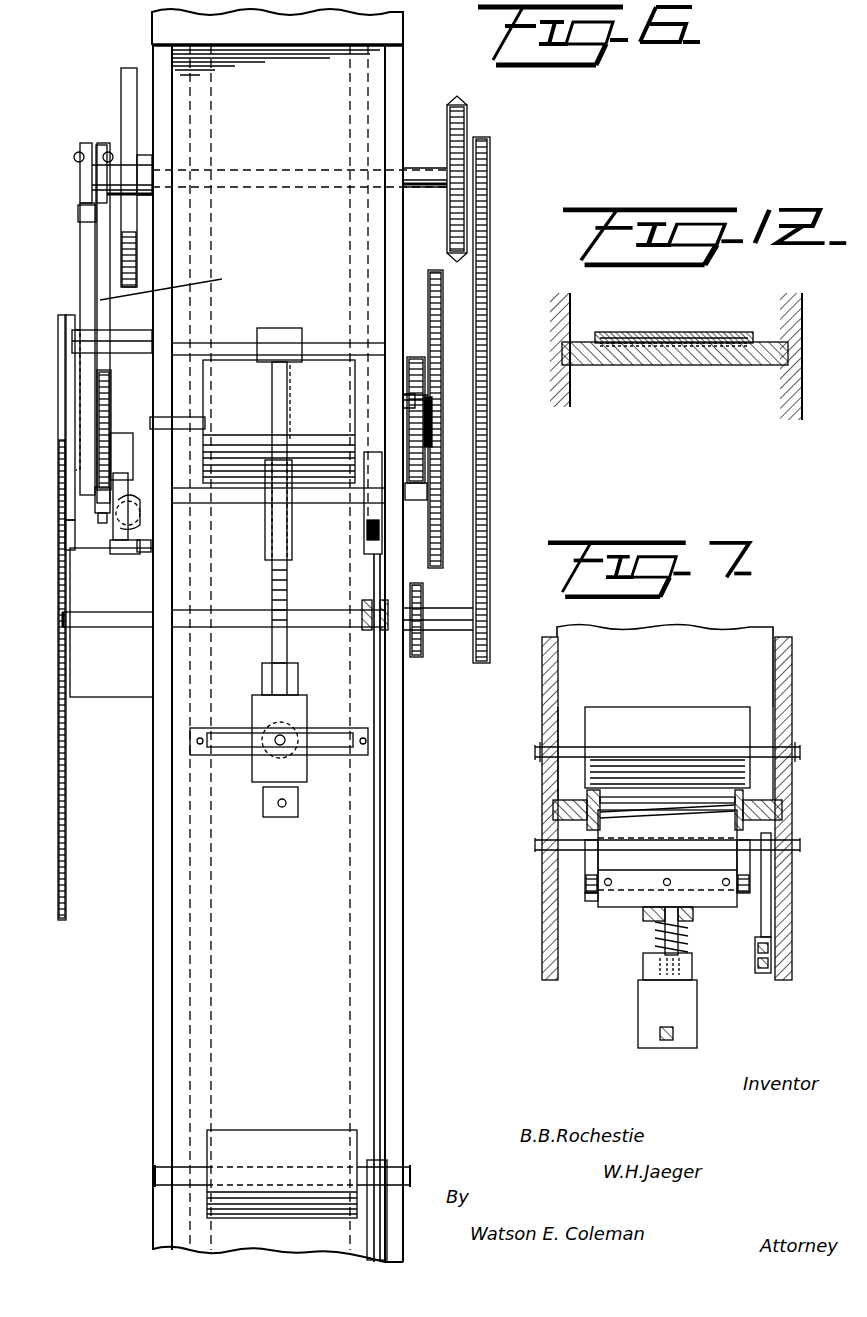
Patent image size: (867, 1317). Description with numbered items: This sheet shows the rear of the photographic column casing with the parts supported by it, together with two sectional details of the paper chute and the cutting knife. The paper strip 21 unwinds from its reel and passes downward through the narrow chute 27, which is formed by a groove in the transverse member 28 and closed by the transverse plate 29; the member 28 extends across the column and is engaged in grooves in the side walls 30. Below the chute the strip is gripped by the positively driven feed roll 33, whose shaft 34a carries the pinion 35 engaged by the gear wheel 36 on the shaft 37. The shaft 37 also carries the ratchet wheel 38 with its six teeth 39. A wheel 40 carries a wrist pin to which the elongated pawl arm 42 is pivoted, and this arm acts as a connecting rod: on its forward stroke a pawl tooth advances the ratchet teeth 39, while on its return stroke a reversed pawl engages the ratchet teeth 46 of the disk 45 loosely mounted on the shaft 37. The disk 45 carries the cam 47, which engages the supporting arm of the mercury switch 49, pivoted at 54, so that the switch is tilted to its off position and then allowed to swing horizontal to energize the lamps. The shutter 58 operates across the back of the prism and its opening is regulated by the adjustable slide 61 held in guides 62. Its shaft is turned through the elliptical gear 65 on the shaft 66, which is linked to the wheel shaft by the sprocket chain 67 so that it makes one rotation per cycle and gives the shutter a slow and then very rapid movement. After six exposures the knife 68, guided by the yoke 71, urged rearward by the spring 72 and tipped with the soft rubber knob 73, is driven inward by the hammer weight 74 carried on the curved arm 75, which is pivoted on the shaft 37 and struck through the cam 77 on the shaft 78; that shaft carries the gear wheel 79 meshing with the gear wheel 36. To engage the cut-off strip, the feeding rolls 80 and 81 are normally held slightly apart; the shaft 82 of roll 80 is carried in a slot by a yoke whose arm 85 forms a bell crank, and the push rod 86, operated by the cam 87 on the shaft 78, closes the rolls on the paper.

In FIG. 12, the strip of paper 21 is at (682, 348).
In FIG. 7, the strip of paper 21 is at (655, 797).
In FIG. 12, the chute 27 is at (708, 332).
In FIG. 6, the transverse member 28 is at (257, 474).
In FIG. 12, the transverse member 28 is at (726, 365).
In FIG. 7, the transverse member 28 is at (782, 808).
In FIG. 12, the transverse plate 29 is at (650, 332).
In FIG. 6, the side walls 30 is at (404, 843).
In FIG. 12, the side walls 30 is at (570, 398).
In FIG. 7, the side walls 30 is at (792, 698).
In FIG. 6, the feed roll 33 is at (279, 421).
In FIG. 6, the shaft 34a is at (180, 422).
In FIG. 6, the pinion 35 is at (448, 398).
In FIG. 6, the gear wheel 36 is at (442, 318).
In FIG. 6, the shaft 37 is at (316, 336).
In FIG. 6, the ratchet wheel 38 is at (80, 271).
In FIG. 6, the ratchet teeth 39 is at (78, 222).
In FIG. 6, the wheel 40 is at (121, 117).
In FIG. 6, the arm or elongated pawl 42 is at (80, 183).
In FIG. 6, the disk 45 is at (177, 285).
In FIG. 6, the ratchet teeth 46 is at (103, 524).
In FIG. 6, the cam 47 is at (118, 440).
In FIG. 6, the mercury switch 49 is at (135, 507).
In FIG. 6, the pivot 54 is at (142, 555).
In FIG. 6, the shutter 58 is at (66, 813).
In FIG. 6, the adjustable slide 61 is at (78, 520).
In FIG. 6, the guides 62 is at (72, 412).
In FIG. 6, the elliptical gear 65 is at (426, 590).
In FIG. 6, the shaft 66 is at (460, 630).
In FIG. 6, the sprocket chain 67 is at (492, 420).
In FIG. 7, the knife 68 is at (667, 858).
In FIG. 6, the yoke 71 is at (296, 795).
In FIG. 7, the yoke 71 is at (680, 925).
In FIG. 7, the spring 72 is at (655, 940).
In FIG. 7, the knob 73 is at (693, 970).
In FIG. 6, the hammer or weight 74 is at (265, 775).
In FIG. 7, the hammer or weight 74 is at (648, 1002).
In FIG. 6, the curved arm 75 is at (288, 383).
In FIG. 7, the curved arm 75 is at (667, 1042).
In FIG. 6, the cam 77 is at (294, 472).
In FIG. 6, the shaft 78 is at (302, 508).
In FIG. 6, the gear wheel 79 is at (440, 508).
In FIG. 6, the feeding roll 80 is at (340, 1157).
In FIG. 7, the feeding roll 80 is at (590, 898).
In FIG. 7, the feeding roll 81 is at (706, 712).
In FIG. 6, the shaft 82 is at (154, 1178).
In FIG. 6, the arm 85 is at (384, 1256).
In FIG. 7, the arm 85 is at (768, 918).
In FIG. 7, the push rod 86 is at (755, 965).
In FIG. 6, the cam 87 is at (368, 522).